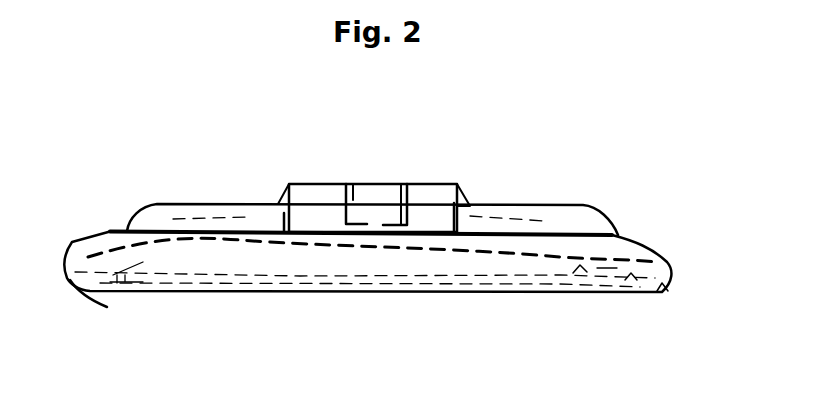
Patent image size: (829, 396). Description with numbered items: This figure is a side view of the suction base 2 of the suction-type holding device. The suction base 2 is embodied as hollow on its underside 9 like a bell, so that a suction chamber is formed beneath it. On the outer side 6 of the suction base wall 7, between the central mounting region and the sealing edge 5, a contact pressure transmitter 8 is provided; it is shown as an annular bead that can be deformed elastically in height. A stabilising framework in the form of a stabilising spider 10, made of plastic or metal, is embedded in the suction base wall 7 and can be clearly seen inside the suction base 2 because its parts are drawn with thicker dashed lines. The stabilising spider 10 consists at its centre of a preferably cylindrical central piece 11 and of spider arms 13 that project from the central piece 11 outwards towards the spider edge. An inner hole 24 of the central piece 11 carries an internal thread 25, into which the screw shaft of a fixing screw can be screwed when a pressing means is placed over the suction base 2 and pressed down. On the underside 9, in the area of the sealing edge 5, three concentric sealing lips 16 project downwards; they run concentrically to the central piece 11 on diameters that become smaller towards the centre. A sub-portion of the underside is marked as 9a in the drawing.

The suction base 2 is at (565, 255).
The sealing edge 5 is at (596, 265).
The outer side 6 is at (629, 241).
The suction base wall 7 is at (650, 253).
The contact pressure transmitter 8 is at (533, 220).
The underside 9 is at (328, 247).
The backing layer section 9a is at (292, 262).
The stabilising spider 10 is at (287, 231).
The central piece 11 is at (442, 192).
The spider arms 13 is at (150, 307).
The sealing lips 16 is at (110, 277).
The inner hole 24 is at (378, 193).
The internal thread 25 is at (353, 192).